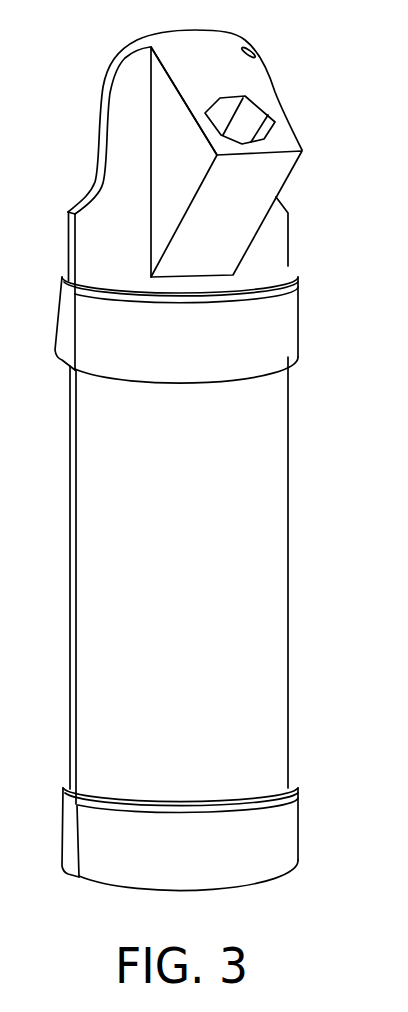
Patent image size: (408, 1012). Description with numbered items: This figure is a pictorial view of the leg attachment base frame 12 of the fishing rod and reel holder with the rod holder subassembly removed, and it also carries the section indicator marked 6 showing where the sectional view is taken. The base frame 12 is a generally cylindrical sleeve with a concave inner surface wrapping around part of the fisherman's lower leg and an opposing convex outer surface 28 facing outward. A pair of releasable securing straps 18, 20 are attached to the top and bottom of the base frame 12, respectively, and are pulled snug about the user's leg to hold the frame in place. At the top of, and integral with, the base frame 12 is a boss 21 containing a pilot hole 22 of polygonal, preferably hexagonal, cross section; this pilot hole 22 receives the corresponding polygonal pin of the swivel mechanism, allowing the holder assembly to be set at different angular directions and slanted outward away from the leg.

The base frame 12 is at (288, 442).
The securing strap 18 is at (285, 337).
The securing strap 20 is at (263, 852).
The boss 21 is at (272, 190).
The pilot hole 22 is at (248, 118).
The convex outer surface 28 is at (197, 705).
The section line 6- 6 is at (38, 500).